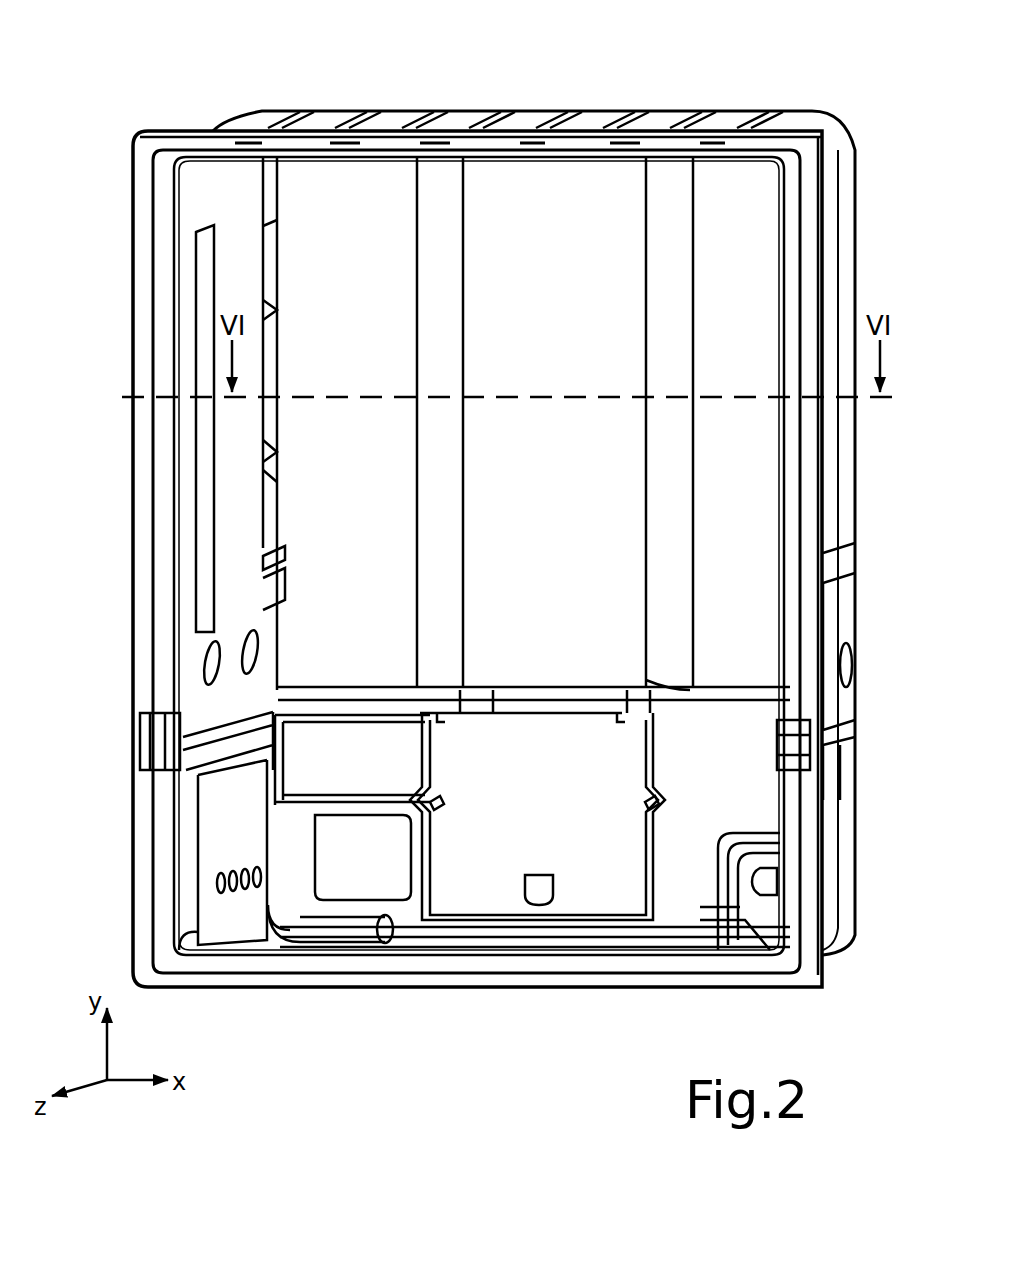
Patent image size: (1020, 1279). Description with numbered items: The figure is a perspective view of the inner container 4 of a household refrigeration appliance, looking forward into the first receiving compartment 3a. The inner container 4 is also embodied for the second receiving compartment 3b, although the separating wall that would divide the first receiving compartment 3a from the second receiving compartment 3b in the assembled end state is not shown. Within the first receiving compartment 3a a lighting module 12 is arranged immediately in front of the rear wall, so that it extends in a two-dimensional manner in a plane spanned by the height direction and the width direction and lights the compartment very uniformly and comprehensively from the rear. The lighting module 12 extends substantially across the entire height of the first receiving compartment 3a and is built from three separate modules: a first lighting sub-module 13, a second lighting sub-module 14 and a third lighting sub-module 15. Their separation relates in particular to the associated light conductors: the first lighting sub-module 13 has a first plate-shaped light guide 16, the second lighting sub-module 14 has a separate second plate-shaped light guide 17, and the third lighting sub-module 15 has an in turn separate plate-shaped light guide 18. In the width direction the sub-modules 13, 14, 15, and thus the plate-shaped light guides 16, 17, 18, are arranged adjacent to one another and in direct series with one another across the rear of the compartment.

The first receiving compartment 3a is at (232, 205).
The second receiving compartment 3b is at (497, 870).
The inner container 4 is at (585, 104).
The lighting module 12 is at (483, 737).
The first lighting sub-module 13 is at (363, 237).
The second lighting sub-module 14 is at (533, 215).
The third lighting sub-module 15 is at (723, 210).
The first plate-shaped light guide 16 is at (338, 270).
The second plate-shaped light guide 17 is at (606, 220).
The plate-shaped light guide 18 is at (730, 255).